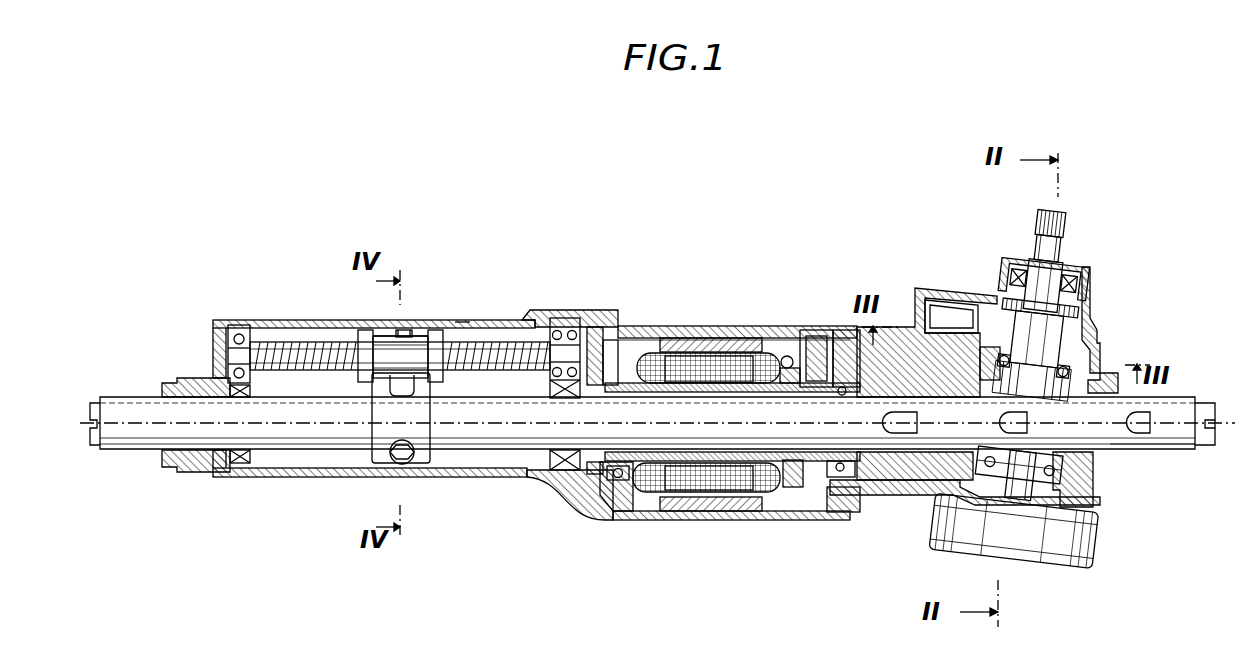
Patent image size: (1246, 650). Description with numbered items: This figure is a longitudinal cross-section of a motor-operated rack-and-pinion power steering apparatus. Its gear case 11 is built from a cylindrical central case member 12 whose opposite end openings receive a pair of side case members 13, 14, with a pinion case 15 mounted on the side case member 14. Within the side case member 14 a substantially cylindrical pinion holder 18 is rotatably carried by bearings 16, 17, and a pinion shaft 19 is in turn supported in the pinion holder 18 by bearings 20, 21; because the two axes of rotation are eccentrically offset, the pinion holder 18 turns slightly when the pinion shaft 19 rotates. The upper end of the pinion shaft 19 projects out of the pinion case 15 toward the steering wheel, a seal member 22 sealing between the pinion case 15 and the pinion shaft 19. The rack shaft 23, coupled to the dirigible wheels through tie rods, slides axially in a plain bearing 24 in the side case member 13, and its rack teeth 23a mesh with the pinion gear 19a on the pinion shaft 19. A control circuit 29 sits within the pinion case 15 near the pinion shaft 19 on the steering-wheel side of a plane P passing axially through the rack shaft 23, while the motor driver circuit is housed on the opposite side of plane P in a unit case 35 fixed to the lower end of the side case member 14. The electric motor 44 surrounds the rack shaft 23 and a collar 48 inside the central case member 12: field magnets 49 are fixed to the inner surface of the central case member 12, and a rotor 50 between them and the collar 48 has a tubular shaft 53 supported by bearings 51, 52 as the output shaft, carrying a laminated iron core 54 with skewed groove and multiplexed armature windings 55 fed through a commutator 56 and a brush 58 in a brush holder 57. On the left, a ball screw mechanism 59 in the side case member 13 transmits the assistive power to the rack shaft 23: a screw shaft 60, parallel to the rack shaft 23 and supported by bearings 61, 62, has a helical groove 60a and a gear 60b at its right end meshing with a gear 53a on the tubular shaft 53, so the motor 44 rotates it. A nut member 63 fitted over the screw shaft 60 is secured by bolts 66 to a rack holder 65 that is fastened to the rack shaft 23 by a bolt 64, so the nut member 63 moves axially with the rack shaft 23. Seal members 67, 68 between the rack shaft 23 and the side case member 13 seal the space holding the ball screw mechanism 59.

The gear case 11 is at (585, 472).
The cylindrical central case member 12 is at (800, 520).
The side case member 13 is at (493, 320).
The side case member 14 is at (865, 497).
The pinion case 15 is at (1097, 345).
The bearing 16 is at (1108, 374).
The bearing 17 is at (1062, 472).
The pinion holder 18 is at (1000, 350).
The pinion shaft 19 is at (1063, 245).
The pinion gear 19a is at (1010, 328).
The bearing 20 is at (1003, 362).
The bearing 21 is at (1020, 490).
The seal member 22 is at (1072, 283).
The rack shaft 23 is at (128, 397).
The rack teeth 23a is at (1125, 446).
The plain bearing 24 is at (200, 378).
The control circuit 29 is at (935, 290).
The unit case 35 is at (1098, 533).
The electric motor 44 is at (748, 312).
The collar 48 is at (838, 461).
The field magnets 49 is at (676, 338).
The rotor 50 is at (645, 350).
The bearing 51 is at (635, 511).
The bearing 52 is at (836, 512).
The tubular shaft 53 is at (766, 511).
The gear 53a is at (612, 480).
The laminated iron core 54 is at (724, 358).
The armature windings 55 is at (698, 353).
The commutator 56 is at (786, 356).
The brush holder 57 is at (812, 330).
The brush 58 is at (842, 330).
The ball screw mechanism 59 is at (448, 306).
The screw shaft 60 is at (365, 338).
The helical groove 60a is at (490, 370).
The gear 60b is at (595, 327).
The bearing 61 is at (238, 325).
The bearing 62 is at (562, 318).
The nut member 63 is at (380, 336).
The bolt 64 is at (408, 458).
The rack holder 65 is at (372, 430).
The bolts 66 is at (406, 330).
The seal member 67 is at (240, 463).
The seal member 68 is at (562, 470).
The plane P is at (1215, 428).